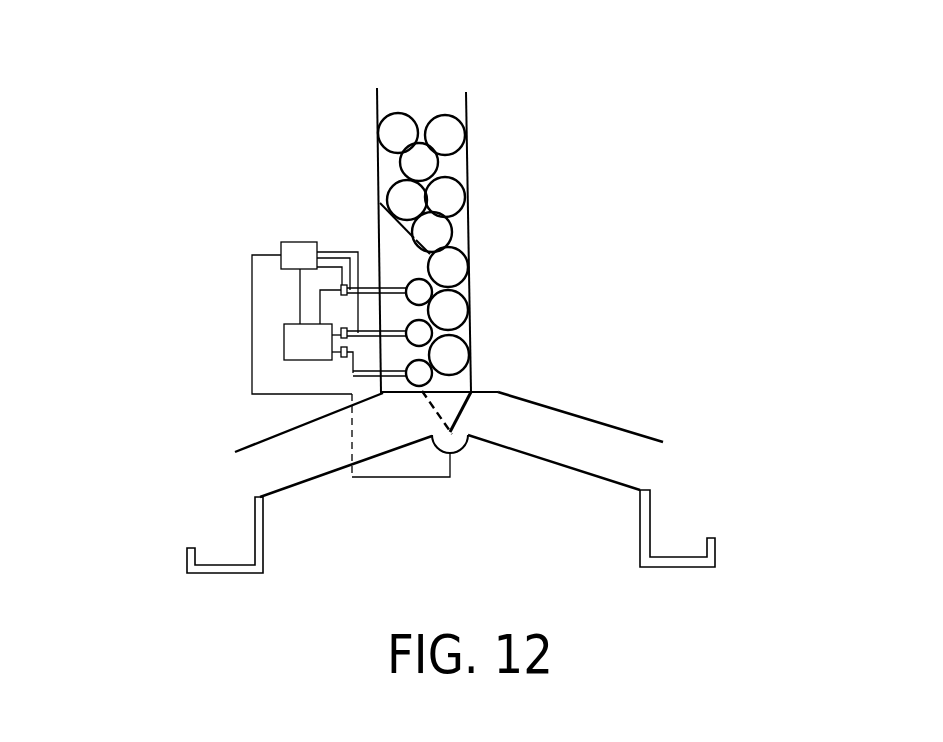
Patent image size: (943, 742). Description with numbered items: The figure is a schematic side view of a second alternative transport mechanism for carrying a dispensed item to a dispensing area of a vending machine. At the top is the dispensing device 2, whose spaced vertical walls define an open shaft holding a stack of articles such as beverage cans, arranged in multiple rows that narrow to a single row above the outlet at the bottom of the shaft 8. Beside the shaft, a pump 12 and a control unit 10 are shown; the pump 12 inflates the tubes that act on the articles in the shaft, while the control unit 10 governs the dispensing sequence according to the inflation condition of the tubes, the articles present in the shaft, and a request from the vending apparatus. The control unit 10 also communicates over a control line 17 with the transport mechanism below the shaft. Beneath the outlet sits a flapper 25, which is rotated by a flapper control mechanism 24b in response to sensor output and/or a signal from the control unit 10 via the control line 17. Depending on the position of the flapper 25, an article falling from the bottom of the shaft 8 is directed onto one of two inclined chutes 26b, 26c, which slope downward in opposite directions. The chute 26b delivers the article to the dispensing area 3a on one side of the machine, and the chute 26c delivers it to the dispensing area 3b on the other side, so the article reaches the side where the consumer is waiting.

The dispensing device 2 is at (338, 157).
The control unit 10 is at (293, 250).
The control line 17 is at (252, 297).
The pump 12 is at (292, 343).
The bottom of the shaft 8 is at (498, 392).
The flapper 25 is at (458, 421).
The flapper control mechanism 24b is at (457, 443).
The inclined chute 26b is at (305, 478).
The inclined chute 26c is at (573, 467).
The dispensing area 3a is at (223, 527).
The dispensing area 3b is at (677, 524).